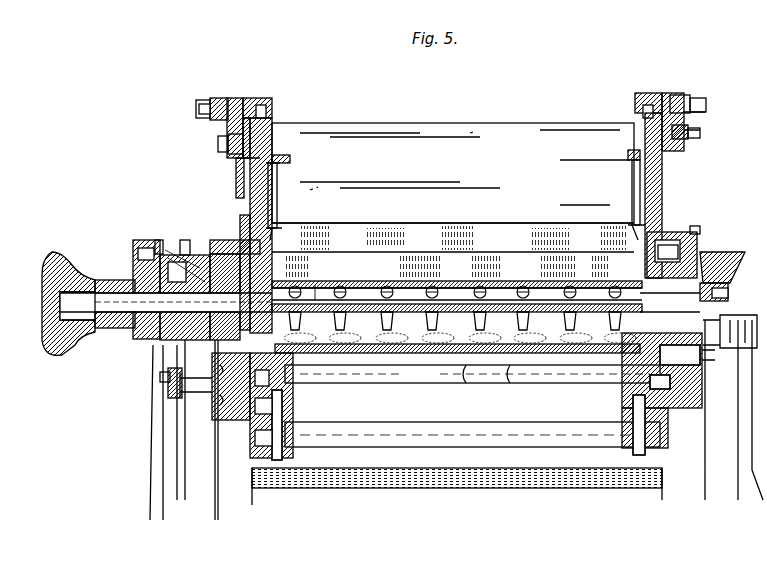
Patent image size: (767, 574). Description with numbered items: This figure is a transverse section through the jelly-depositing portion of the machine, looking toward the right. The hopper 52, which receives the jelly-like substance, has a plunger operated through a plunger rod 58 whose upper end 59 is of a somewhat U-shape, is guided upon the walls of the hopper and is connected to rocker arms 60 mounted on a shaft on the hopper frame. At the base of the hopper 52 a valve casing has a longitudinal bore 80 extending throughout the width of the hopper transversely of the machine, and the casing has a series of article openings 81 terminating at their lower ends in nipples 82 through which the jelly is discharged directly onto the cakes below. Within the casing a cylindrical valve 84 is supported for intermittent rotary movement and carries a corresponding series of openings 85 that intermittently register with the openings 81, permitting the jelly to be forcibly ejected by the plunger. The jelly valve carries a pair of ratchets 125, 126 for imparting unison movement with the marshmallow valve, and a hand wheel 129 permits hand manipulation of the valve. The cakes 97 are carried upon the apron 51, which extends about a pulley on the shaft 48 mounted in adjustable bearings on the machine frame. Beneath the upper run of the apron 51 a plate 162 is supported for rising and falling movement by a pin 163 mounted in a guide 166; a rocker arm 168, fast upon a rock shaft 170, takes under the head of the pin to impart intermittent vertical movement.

The shaft 48 is at (398, 383).
The apron 51 is at (478, 378).
The hopper 52 is at (478, 128).
The plunger rod 58 is at (278, 196).
The upper end of plunger rod 59 is at (268, 125).
The rocker arms 60 is at (216, 122).
The longitudinal bore 80 is at (497, 283).
The article openings 81 is at (432, 285).
The nipples 82 is at (376, 302).
The cylindrical valve 84 is at (331, 292).
The openings 85 is at (343, 284).
The cakes 97 is at (330, 382).
The ratchet 125 is at (138, 338).
The ratchet 126 is at (152, 342).
The hand wheel 129 is at (60, 252).
The plate 162 is at (560, 370).
The pin 163 is at (612, 372).
The guide 166 is at (298, 430).
The rocker arm 168 is at (300, 402).
The rock shaft 170 is at (433, 432).